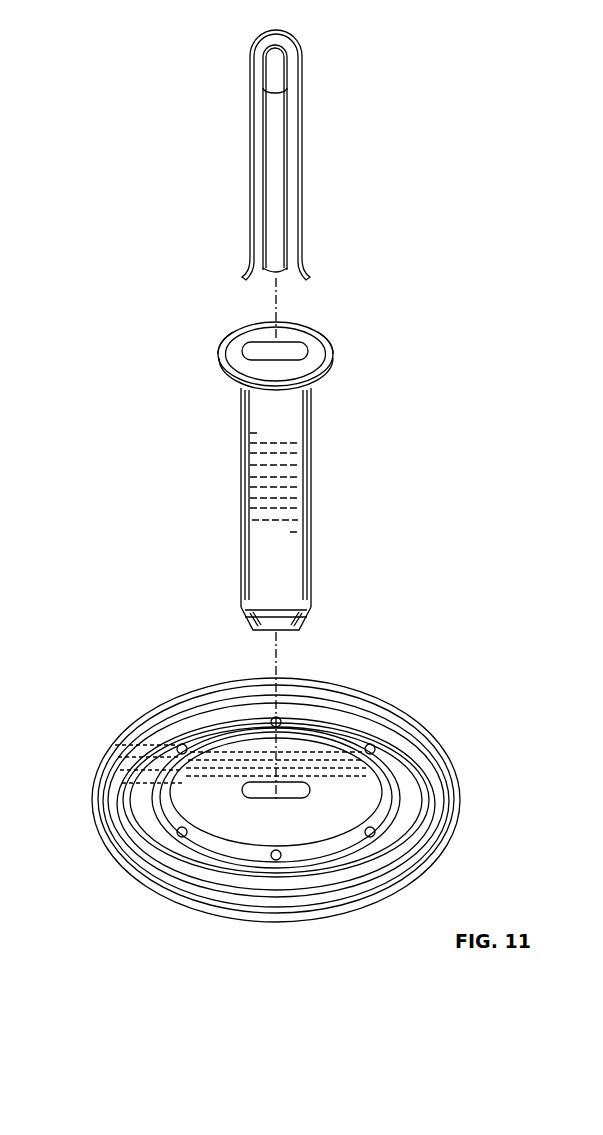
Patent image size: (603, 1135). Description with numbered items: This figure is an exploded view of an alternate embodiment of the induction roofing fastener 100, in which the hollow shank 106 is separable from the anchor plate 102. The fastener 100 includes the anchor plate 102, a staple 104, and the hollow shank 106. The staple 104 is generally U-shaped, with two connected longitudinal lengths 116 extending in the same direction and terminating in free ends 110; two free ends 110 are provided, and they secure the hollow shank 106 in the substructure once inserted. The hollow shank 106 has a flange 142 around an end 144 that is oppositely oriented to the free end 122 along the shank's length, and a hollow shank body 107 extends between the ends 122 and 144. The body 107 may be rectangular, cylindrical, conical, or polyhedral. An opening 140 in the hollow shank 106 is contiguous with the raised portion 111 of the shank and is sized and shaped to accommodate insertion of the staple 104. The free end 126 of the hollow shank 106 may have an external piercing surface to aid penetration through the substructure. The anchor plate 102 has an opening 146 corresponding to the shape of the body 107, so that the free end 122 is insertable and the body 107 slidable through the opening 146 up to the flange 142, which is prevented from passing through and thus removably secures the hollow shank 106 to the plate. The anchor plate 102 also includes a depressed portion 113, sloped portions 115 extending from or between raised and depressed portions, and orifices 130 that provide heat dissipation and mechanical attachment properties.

The induction roofing fastener 100 is at (405, 388).
The anchor plate 102 is at (150, 705).
The staple 104 is at (250, 130).
The hollow shank 106 is at (240, 510).
The hollow shank body 107 is at (290, 443).
The free ends 110 is at (263, 262).
The raised portion 111 is at (258, 337).
The depressed portion 113 is at (235, 760).
The sloped portion 115 is at (228, 374).
The longitudinal lengths 116 is at (270, 92).
The free end of hollow shank 122 is at (253, 625).
The free end of hollow shank 126 is at (300, 620).
The orifices 130 is at (385, 820).
The opening 140 is at (295, 350).
The flange 142 is at (333, 355).
The end of hollow shank 144 is at (220, 355).
The opening in anchor plate 146 is at (300, 785).